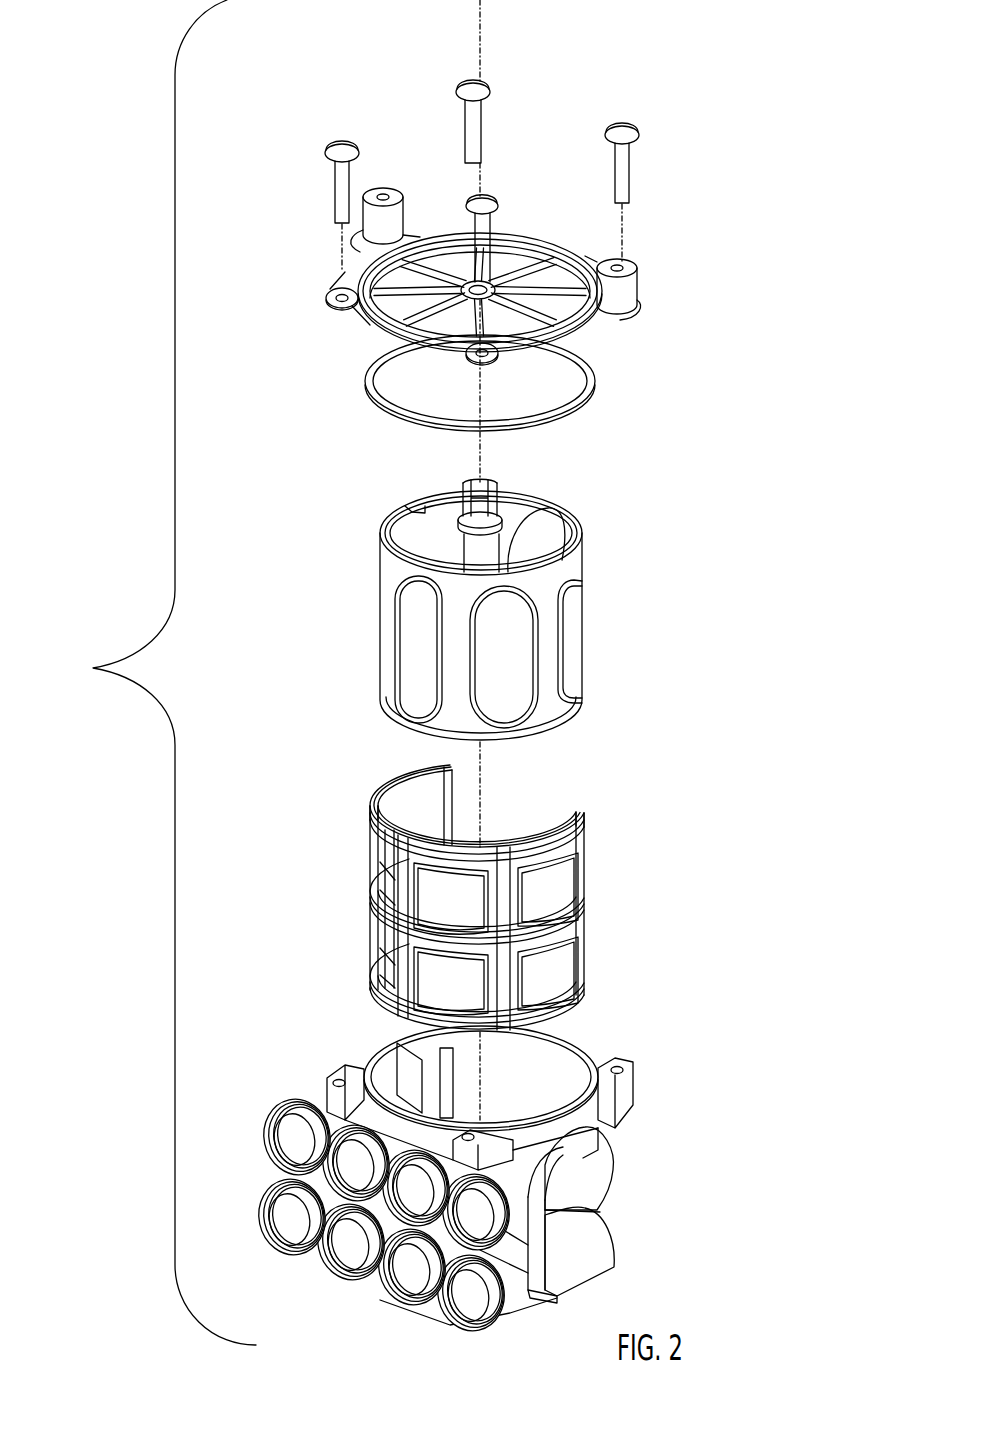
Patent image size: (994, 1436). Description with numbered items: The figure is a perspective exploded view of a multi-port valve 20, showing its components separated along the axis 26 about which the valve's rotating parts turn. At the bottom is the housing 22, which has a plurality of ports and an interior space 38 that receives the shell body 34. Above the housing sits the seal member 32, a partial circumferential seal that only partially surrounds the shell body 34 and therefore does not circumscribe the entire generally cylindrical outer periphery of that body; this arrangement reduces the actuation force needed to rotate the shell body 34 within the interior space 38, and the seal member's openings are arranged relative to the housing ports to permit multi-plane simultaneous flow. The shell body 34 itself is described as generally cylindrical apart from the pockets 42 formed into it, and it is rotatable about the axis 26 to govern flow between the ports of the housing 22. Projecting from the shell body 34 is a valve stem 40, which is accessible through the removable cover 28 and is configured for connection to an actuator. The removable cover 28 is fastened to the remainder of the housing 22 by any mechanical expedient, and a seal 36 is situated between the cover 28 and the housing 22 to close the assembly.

The multi-port valve 20 is at (95, 668).
The housing 22 is at (464, 1173).
The axis 26 is at (483, 31).
The removable cover 28 is at (577, 263).
The seal member 32 is at (323, 915).
The shell body 34 is at (421, 601).
The seal 36 is at (596, 381).
The interior space 38 is at (534, 1087).
The valve stem 40 is at (500, 494).
The pockets 42 is at (416, 644).